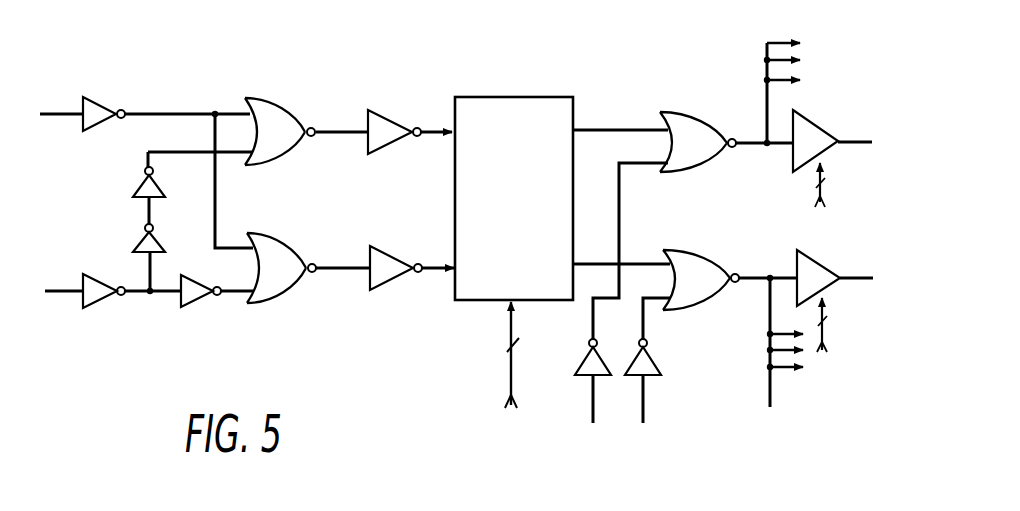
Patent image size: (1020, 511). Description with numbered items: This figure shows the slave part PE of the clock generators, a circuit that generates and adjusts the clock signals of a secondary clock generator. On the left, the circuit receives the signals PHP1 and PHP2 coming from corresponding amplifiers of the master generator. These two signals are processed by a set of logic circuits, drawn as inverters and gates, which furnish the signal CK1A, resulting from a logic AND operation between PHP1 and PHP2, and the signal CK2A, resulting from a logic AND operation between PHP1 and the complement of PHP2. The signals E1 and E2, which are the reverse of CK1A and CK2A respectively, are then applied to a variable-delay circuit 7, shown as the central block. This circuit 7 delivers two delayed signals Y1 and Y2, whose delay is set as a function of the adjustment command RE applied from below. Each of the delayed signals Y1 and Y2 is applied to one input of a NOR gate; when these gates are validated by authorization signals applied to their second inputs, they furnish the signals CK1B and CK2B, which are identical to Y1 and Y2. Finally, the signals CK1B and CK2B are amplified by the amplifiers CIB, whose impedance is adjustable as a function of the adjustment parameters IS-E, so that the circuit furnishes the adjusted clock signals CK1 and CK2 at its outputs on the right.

The variable-delay circuit 7 is at (528, 95).
The signal PHP1 is at (67, 114).
The signal PHP2 is at (70, 291).
The signal CK1A is at (350, 130).
The signal CK2A is at (355, 275).
The signal E1 is at (432, 135).
The signal E2 is at (430, 262).
The delayed signal Y1 is at (623, 127).
The delayed signal Y2 is at (601, 250).
The signal CK1B is at (745, 140).
The signal CK2B is at (745, 285).
The adjusted clock signal CK1 is at (860, 140).
The adjusted clock signal CK2 is at (860, 270).
The amplifiers CIB is at (782, 174).
The adjustment parameters IS-E is at (850, 257).
The adjustment command RE is at (492, 355).
The slave part PE is at (464, 50).